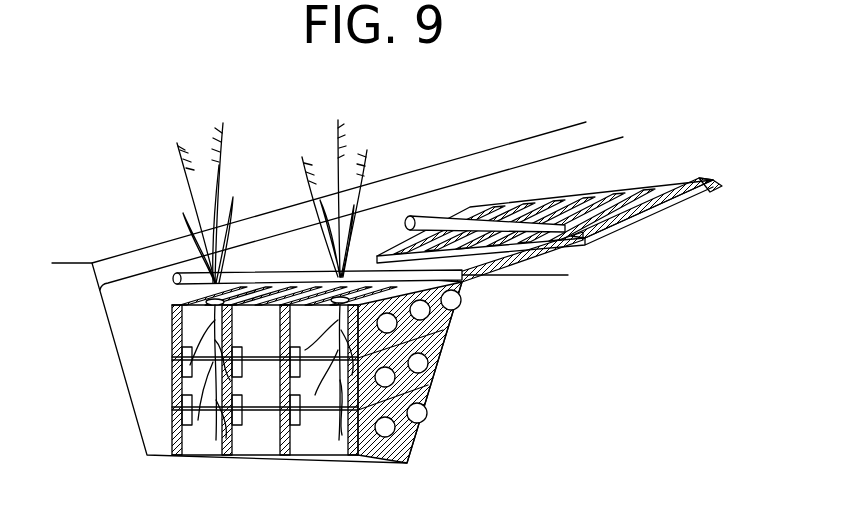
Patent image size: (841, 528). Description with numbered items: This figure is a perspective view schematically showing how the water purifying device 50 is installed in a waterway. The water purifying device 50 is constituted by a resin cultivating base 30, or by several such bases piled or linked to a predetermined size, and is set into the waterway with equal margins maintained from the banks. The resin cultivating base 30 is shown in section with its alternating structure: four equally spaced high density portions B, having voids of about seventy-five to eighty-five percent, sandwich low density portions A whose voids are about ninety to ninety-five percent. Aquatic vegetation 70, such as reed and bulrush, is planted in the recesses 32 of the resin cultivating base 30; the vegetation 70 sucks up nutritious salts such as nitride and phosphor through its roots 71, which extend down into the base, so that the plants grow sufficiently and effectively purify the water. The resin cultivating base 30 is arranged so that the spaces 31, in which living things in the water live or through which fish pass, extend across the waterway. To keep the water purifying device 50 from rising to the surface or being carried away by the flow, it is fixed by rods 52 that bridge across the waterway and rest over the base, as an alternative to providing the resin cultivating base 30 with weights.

The resin cultivating base 30 is at (172, 413).
The spaces 31 is at (428, 362).
The recesses 32 is at (207, 290).
The water purifying device 50 is at (280, 186).
The rods 52 is at (442, 222).
The vegetation 70 is at (200, 197).
The roots 71 is at (172, 437).
The low density portions A is at (200, 450).
The high density portions B is at (232, 458).